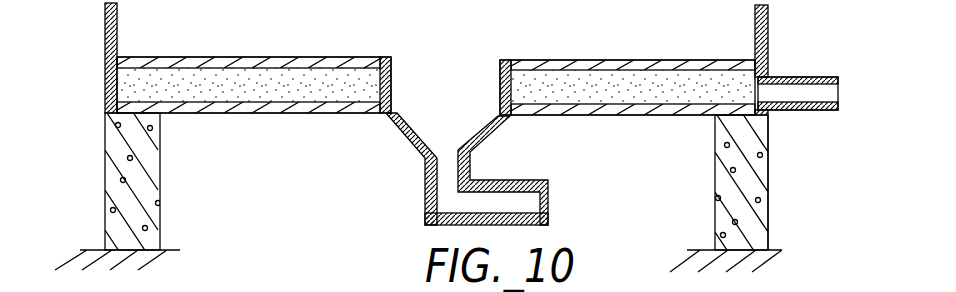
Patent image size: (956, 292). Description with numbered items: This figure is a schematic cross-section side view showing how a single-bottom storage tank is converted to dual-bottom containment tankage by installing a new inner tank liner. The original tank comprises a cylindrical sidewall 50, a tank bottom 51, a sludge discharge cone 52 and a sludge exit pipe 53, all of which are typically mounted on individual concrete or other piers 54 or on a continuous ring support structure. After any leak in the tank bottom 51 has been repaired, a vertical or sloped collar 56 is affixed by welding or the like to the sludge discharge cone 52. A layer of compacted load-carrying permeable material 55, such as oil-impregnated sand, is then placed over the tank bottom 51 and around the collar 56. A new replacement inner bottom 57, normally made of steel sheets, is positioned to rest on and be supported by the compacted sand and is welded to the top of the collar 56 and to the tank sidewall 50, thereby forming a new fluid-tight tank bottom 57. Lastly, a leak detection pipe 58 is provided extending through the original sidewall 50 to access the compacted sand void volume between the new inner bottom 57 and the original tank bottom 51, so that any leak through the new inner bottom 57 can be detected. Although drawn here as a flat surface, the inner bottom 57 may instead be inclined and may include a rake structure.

The cylindrical sidewall 50 is at (770, 48).
The tank bottom 51 is at (572, 118).
The sludge discharge cone 52 is at (400, 128).
The sludge exit pipe 53 is at (440, 226).
The piers 54 is at (125, 145).
The compacted load-carrying permeable material 55 is at (125, 84).
The collar 56 is at (500, 78).
The replacement inner bottom 57 is at (634, 60).
The leak detection pipe 58 is at (793, 110).